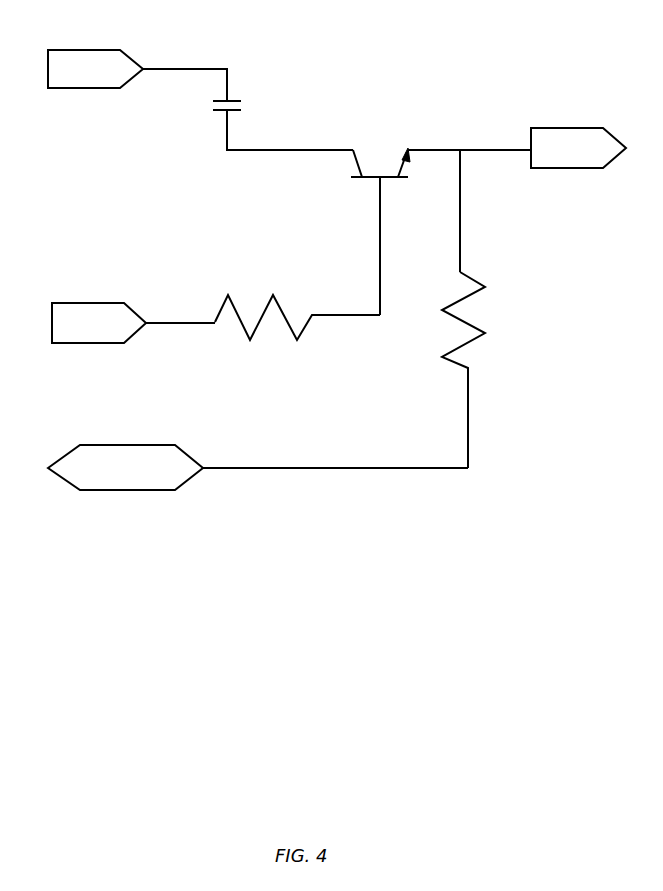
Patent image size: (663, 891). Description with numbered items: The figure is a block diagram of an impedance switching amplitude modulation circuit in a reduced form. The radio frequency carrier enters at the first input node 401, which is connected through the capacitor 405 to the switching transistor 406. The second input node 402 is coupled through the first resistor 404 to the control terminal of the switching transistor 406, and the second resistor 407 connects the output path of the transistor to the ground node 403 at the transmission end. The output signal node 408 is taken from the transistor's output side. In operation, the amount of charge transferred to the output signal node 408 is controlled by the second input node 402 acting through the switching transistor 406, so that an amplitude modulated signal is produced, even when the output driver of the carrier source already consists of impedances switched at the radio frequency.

The first input node 401 is at (83, 50).
The second input node 402 is at (82, 303).
The ground node 403 is at (95, 445).
The first resistor 404 is at (223, 297).
The capacitor 405 is at (240, 112).
The switching transistor 406 is at (356, 163).
The second resistor 407 is at (485, 334).
The output signal node 408 is at (563, 128).